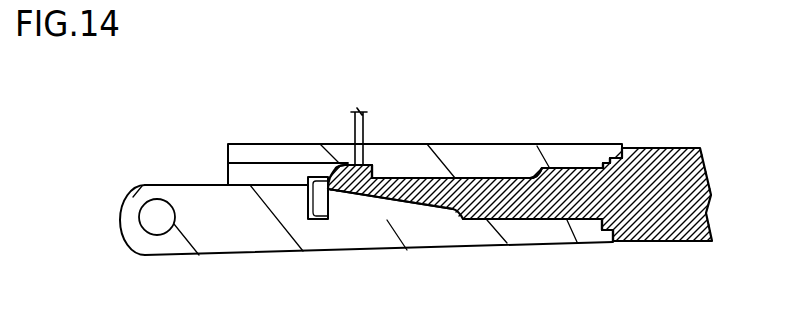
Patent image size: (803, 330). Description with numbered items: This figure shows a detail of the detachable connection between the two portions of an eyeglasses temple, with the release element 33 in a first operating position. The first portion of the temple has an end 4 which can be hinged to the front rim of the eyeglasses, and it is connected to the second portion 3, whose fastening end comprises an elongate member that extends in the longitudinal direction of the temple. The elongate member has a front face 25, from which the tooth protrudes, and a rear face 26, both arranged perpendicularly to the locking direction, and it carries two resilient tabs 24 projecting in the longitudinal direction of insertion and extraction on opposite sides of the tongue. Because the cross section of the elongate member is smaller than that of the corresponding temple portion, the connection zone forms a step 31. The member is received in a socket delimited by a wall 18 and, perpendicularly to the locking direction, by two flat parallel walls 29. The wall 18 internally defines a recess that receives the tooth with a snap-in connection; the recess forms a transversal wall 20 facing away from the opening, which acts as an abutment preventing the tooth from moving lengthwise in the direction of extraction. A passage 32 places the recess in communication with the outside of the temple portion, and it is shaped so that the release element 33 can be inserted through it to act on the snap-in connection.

The second portion 3 is at (687, 217).
The end 4 is at (135, 196).
The wall 18 is at (468, 157).
The transversal wall 20 is at (343, 166).
The resilient tabs 24 is at (322, 208).
The front face 25 is at (504, 178).
The rear face 26 is at (531, 219).
The flat parallel walls 29 is at (393, 208).
The step 31 is at (605, 152).
The passage 32 is at (243, 173).
The release element 33 is at (358, 111).